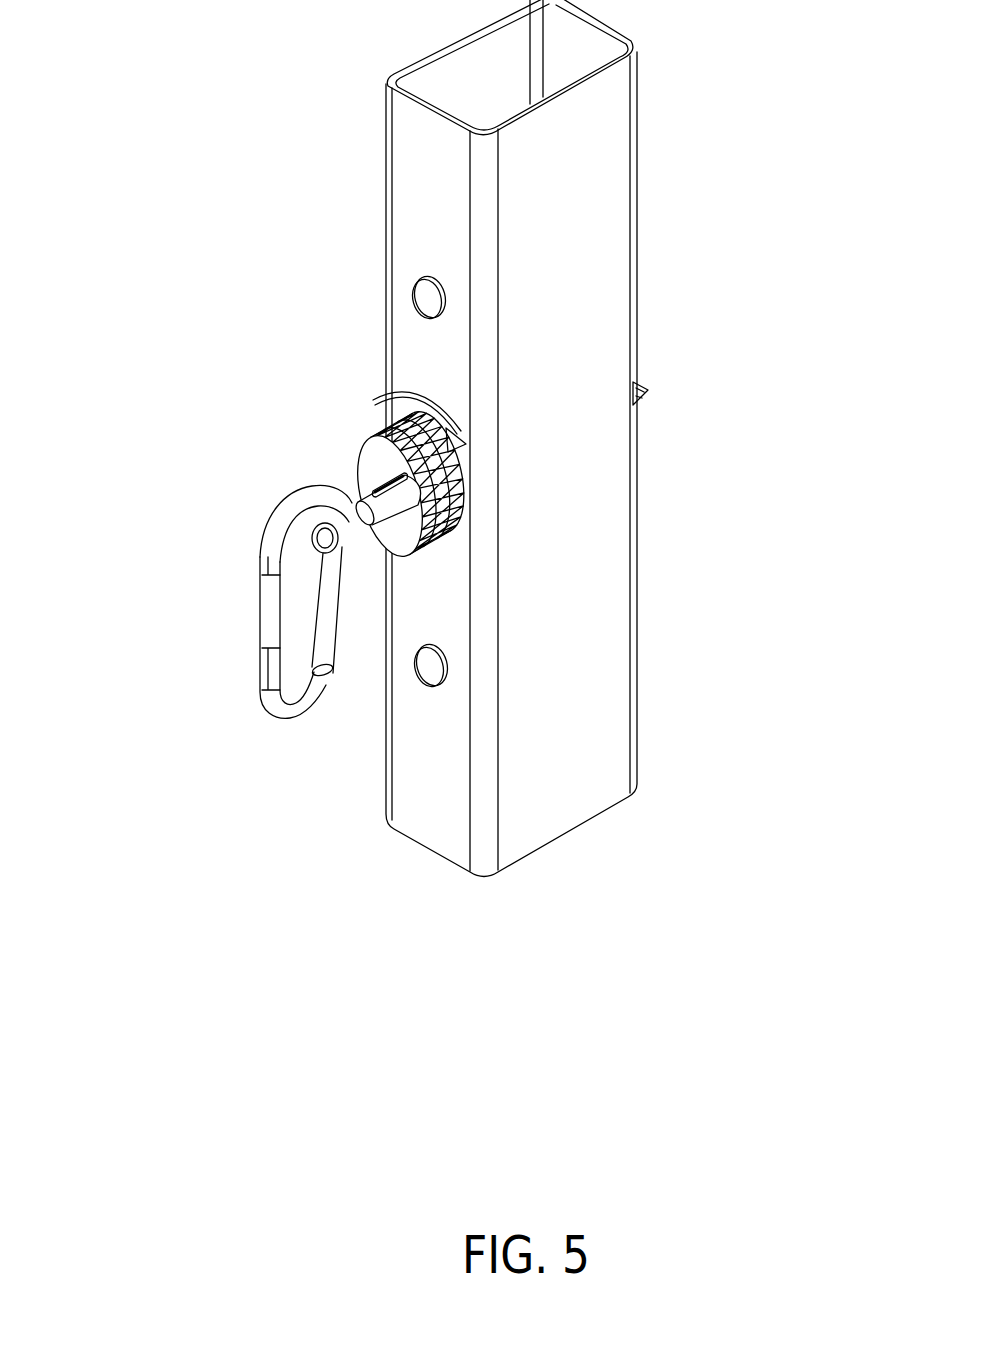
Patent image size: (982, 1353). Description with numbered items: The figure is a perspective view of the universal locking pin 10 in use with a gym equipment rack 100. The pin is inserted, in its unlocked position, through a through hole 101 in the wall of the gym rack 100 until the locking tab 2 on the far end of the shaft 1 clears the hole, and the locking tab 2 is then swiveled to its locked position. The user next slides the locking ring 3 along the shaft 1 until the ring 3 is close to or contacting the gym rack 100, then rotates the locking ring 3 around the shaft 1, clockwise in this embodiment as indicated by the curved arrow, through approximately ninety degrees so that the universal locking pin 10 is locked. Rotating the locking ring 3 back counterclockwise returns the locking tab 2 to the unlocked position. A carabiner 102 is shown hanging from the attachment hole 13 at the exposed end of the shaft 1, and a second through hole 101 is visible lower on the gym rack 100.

The gym equipment rack 100 is at (605, 812).
The through hole 101 is at (436, 300).
The carabiner 102 is at (285, 722).
The universal locking pin 10 is at (279, 416).
The shaft 1 is at (280, 453).
The attachment hole 13 is at (353, 503).
The locking ring 3 is at (363, 437).
The locking tab 2 is at (650, 382).